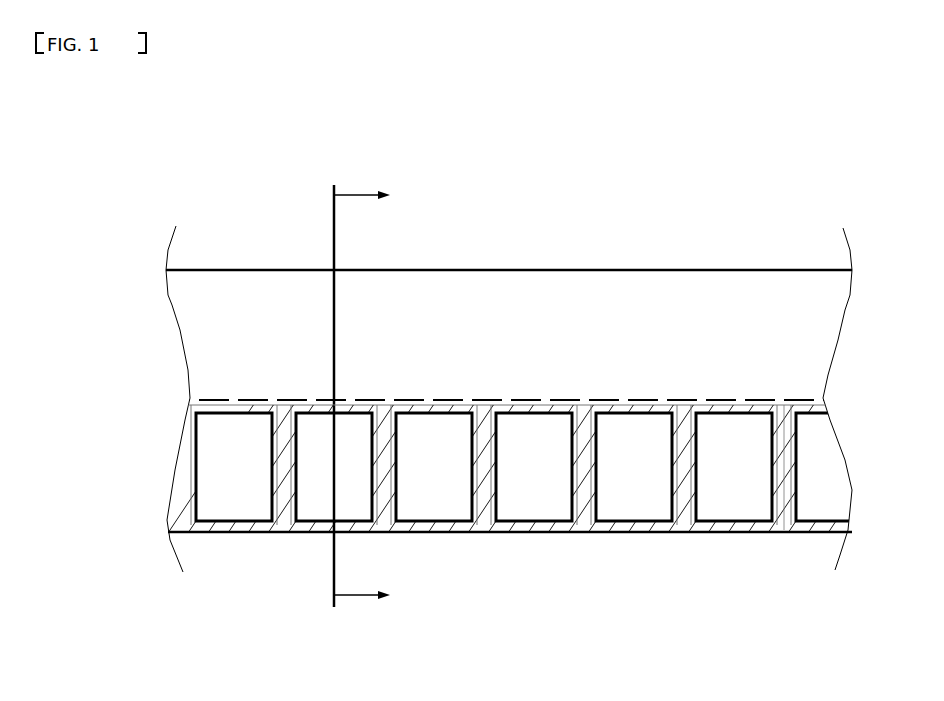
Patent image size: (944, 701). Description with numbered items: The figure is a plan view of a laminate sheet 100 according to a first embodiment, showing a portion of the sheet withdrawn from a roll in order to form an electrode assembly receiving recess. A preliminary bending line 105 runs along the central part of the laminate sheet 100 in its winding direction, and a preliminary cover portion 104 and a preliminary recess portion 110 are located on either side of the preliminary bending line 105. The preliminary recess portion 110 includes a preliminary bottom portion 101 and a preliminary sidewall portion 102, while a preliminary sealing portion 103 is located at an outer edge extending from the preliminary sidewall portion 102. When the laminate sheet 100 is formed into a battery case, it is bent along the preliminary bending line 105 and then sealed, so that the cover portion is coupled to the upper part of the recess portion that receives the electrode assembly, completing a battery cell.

The laminate sheet 100 is at (227, 172).
The preliminary bottom portion 101 is at (760, 508).
The preliminary sidewall portion 102 is at (722, 530).
The preliminary sealing portion 103 is at (684, 534).
The preliminary cover portion 104 is at (155, 270).
The preliminary bending line 105 is at (466, 398).
The preliminary recess portion 110 is at (790, 645).